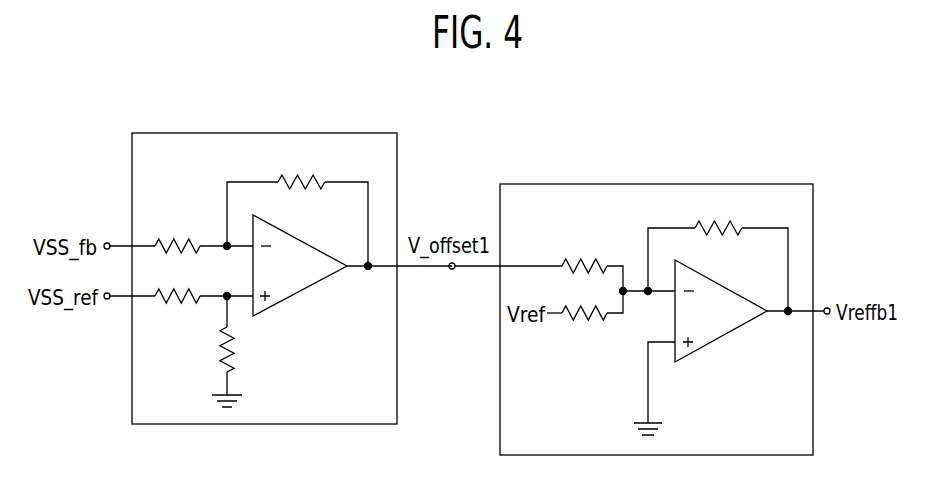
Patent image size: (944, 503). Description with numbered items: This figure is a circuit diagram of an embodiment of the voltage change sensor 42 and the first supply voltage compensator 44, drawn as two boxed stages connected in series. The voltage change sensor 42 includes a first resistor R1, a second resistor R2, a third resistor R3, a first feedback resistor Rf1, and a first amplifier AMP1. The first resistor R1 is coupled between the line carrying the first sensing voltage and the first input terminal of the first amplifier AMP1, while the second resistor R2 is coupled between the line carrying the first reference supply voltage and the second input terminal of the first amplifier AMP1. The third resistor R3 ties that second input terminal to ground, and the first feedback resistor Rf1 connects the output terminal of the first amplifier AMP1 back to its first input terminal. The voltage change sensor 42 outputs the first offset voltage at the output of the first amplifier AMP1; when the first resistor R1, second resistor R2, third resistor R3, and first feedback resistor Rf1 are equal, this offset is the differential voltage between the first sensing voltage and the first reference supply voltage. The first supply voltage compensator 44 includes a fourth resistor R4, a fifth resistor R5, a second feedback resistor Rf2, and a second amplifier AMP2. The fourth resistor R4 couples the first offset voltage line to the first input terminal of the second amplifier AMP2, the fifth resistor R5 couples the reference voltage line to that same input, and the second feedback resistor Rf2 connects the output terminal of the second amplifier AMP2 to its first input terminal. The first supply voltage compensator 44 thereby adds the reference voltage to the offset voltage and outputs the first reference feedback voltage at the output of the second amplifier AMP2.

The voltage change sensor 42 is at (275, 133).
The first supply voltage compensator 44 is at (655, 184).
The first resistor R1 is at (177, 232).
The second resistor R2 is at (177, 313).
The third resistor R3 is at (241, 349).
The first feedback resistor Rf1 is at (301, 168).
The fourth resistor R4 is at (584, 253).
The fifth resistor R5 is at (584, 330).
The second feedback resistor Rf2 is at (718, 214).
The first amplifier AMP1 is at (300, 265).
The second amplifier AMP2 is at (721, 311).